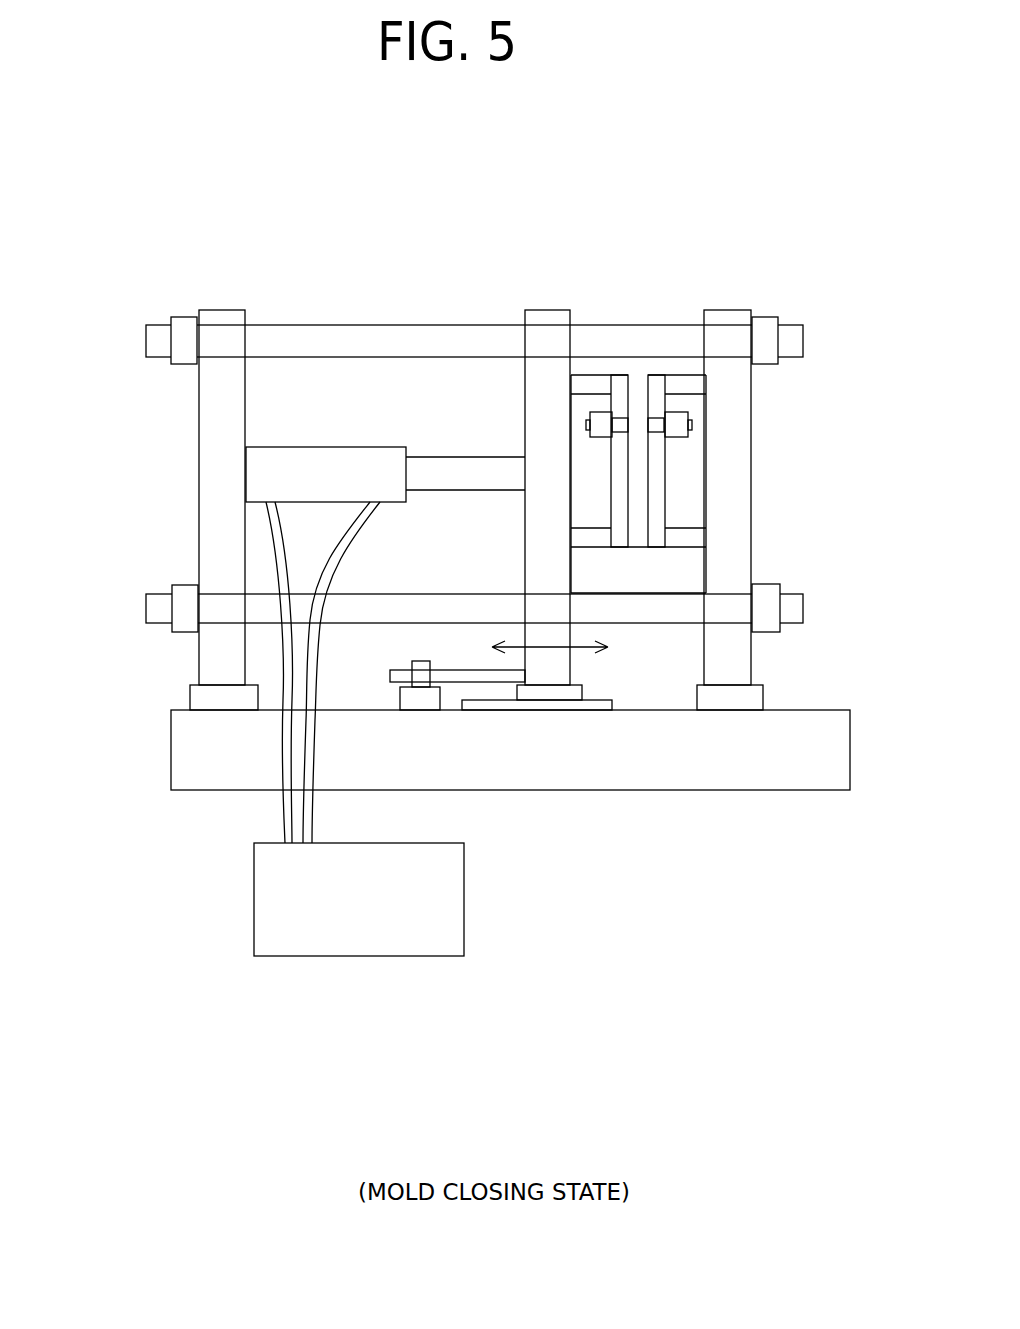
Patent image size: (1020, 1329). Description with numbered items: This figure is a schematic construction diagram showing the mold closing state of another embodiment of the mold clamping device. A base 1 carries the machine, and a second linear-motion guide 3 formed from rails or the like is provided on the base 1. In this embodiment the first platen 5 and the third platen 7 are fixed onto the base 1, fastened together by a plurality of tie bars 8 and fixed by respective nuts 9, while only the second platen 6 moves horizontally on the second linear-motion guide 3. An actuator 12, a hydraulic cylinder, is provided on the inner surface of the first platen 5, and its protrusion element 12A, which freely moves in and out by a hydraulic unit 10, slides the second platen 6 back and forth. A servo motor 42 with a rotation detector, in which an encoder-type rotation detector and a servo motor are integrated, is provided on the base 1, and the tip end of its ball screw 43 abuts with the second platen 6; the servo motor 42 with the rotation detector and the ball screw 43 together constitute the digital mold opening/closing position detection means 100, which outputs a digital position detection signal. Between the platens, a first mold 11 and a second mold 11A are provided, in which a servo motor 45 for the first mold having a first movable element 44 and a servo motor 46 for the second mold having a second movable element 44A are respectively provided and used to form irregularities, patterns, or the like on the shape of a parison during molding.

The base 1 is at (208, 770).
The second linear-motion guide 3 is at (603, 712).
The first platen 5 is at (222, 317).
The second platen 6 is at (555, 317).
The third platen 7 is at (729, 318).
The tie bar 8 is at (284, 340).
The nut 9 is at (182, 318).
The hydraulic unit 10 is at (288, 938).
The first mold 11 is at (595, 538).
The second mold 11A is at (658, 538).
The actuator 12 is at (297, 447).
The protrusion element 12A is at (432, 457).
The servo motor with rotation detector 42 is at (418, 712).
The ball screw 43 is at (456, 710).
The first movable element 44 is at (622, 423).
The second movable element 44A is at (647, 423).
The servo motor for first mold 45 is at (590, 417).
The servo motor for second mold 46 is at (677, 438).
The digital mold opening/closing position detection means 100 is at (527, 990).